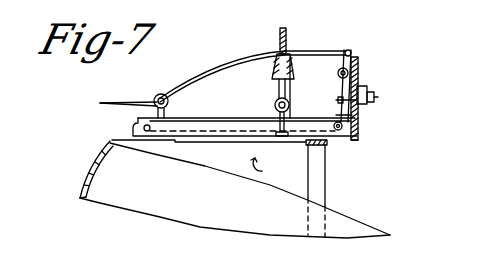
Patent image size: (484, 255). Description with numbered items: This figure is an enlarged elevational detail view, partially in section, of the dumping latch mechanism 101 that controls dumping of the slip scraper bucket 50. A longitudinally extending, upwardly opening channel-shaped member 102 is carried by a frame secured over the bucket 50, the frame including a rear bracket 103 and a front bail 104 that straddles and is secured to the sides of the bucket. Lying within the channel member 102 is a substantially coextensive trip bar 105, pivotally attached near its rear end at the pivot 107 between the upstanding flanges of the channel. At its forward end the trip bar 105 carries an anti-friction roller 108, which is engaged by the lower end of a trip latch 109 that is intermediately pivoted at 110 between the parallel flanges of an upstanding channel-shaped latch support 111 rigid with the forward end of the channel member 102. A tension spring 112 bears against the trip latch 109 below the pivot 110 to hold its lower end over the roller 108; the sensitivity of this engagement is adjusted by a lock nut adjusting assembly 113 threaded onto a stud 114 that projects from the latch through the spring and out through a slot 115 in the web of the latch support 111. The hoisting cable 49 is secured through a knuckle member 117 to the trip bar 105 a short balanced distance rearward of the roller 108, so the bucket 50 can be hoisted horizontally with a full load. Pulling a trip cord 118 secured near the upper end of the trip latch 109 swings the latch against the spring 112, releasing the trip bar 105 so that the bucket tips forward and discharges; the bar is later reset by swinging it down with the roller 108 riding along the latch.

The hoisting cable 49 is at (287, 35).
The slip scraper bucket 50 is at (78, 195).
The dumping latch mechanism 101 is at (272, 171).
The channel-shaped member 102 is at (232, 142).
The rear bracket 103 is at (110, 147).
The front bail 104 is at (326, 172).
The trip bar 105 is at (324, 120).
The pivot 107 is at (144, 128).
The anti-friction roller 108 is at (357, 137).
The trip latch 109 is at (352, 124).
The pivot 110 is at (338, 73).
The latch support 111 is at (359, 80).
The tension spring 112 is at (367, 90).
The lock nut adjusting assembly 113 is at (369, 102).
The stud 114 is at (341, 100).
The slot 115 is at (353, 115).
The knuckle member 117 is at (273, 78).
The trip cord 118 is at (160, 96).